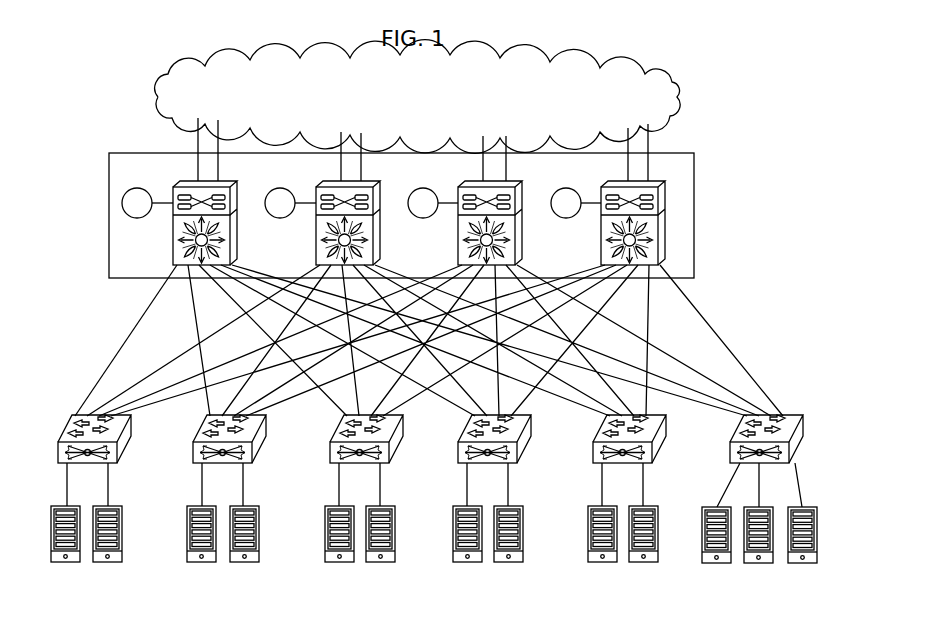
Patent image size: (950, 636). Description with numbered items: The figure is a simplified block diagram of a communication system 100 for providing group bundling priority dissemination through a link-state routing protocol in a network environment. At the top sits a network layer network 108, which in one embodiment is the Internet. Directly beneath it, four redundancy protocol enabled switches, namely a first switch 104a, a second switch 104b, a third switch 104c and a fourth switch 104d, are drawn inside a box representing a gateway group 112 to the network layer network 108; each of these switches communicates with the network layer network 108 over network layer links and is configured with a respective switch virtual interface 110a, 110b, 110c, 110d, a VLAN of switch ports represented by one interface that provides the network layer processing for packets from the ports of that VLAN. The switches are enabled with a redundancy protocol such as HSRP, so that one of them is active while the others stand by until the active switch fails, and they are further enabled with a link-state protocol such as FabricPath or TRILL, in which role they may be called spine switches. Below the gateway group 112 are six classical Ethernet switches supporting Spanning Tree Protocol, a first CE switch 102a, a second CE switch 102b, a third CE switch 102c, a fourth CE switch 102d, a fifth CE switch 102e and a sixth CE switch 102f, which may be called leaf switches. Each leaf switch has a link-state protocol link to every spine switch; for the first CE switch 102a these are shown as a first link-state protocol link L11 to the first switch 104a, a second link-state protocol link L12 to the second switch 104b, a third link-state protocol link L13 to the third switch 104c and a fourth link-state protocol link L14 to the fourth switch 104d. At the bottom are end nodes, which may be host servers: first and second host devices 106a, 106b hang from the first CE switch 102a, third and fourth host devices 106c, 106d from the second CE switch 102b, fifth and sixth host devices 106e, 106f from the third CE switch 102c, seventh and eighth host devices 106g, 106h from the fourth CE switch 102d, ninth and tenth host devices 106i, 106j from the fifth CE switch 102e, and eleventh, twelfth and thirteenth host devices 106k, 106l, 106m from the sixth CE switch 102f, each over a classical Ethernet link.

The communication system 100 is at (112, 62).
The Layer 3 network 108 is at (158, 97).
The gateway group 112 is at (107, 215).
The first switch (S1) 104a is at (181, 185).
The second switch (S2) 104b is at (324, 185).
The third switch (S3) 104c is at (466, 185).
The fourth switch (S4) 104d is at (609, 185).
The switch virtual interface (SVI) 110a is at (141, 218).
The switch virtual interface (SVI) 110b is at (284, 218).
The switch virtual interface (SVI) 110c is at (427, 218).
The switch virtual interface (SVI) 110d is at (570, 218).
The first classical Ethernet (CE) switch (C1) 102a is at (58, 454).
The second classical Ethernet (CE) switch (C2) 102b is at (193, 454).
The third classical Ethernet (CE) switch (C3) 102c is at (330, 454).
The fourth classical Ethernet (CE) switch (C4) 102d is at (531, 427).
The fifth classical Ethernet (CE) switch (C5) 102e is at (666, 427).
The sixth classical Ethernet (CE) switch (C6) 102f is at (803, 427).
The first host device 106a is at (65, 562).
The second host device 106b is at (108, 562).
The third host device 106c is at (201, 562).
The fourth host device 106d is at (245, 562).
The fifth host device 106e is at (339, 562).
The sixth host device 106f is at (380, 562).
The seventh host device 106g is at (467, 562).
The eighth host device 106h is at (508, 562).
The ninth host device 106i is at (602, 562).
The tenth host device 106j is at (643, 562).
The eleventh host device 106k is at (717, 563).
The twelfth host device 106l is at (759, 563).
The thirteenth host device 106m is at (802, 563).
The first link-state protocol link L11 is at (128, 337).
The second link-state protocol link L12 is at (155, 371).
The third link-state protocol link L13 is at (265, 345).
The fourth link-state protocol link L14 is at (131, 420).